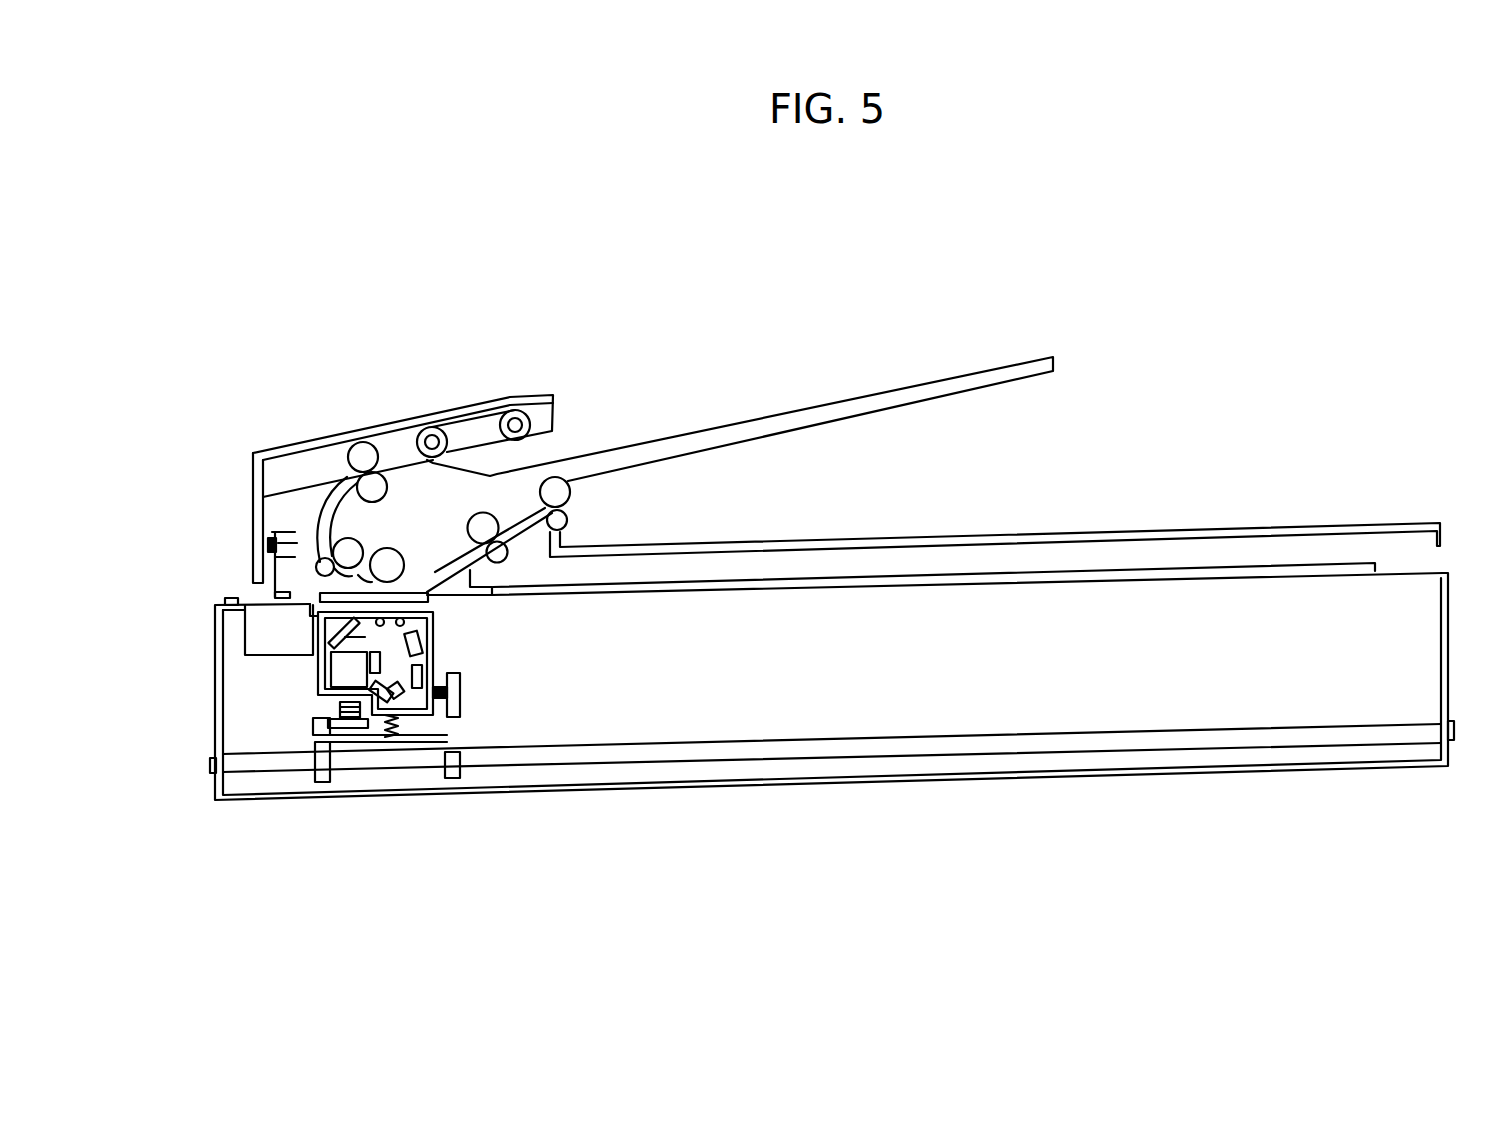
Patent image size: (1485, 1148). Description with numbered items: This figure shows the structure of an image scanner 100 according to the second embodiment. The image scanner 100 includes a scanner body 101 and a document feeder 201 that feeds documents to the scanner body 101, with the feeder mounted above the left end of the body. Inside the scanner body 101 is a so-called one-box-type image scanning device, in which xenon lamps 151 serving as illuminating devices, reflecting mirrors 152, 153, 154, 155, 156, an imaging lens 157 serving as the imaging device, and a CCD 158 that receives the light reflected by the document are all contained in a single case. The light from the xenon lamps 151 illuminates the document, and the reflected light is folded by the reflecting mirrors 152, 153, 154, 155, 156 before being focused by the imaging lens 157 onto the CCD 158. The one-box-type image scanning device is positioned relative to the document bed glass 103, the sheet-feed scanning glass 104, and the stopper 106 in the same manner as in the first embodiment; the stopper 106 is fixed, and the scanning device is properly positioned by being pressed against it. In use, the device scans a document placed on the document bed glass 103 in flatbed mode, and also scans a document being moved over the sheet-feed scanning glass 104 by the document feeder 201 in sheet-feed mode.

The image scanner 100 is at (1135, 333).
The scanner body 101 is at (206, 724).
The document bed glass 103 is at (1113, 567).
The sheet-feed scanning glass 104 is at (333, 596).
The stopper 106 is at (268, 625).
The document feeder 201 is at (495, 379).
The xenon lamps 151 is at (380, 627).
The reflecting mirror 152 is at (386, 725).
The reflecting mirror 153 is at (420, 680).
The reflecting mirror 154 is at (377, 736).
The reflecting mirror 155 is at (420, 648).
The reflecting mirror 156 is at (318, 657).
The imaging lens 157 is at (340, 678).
The CCD 158 is at (345, 708).